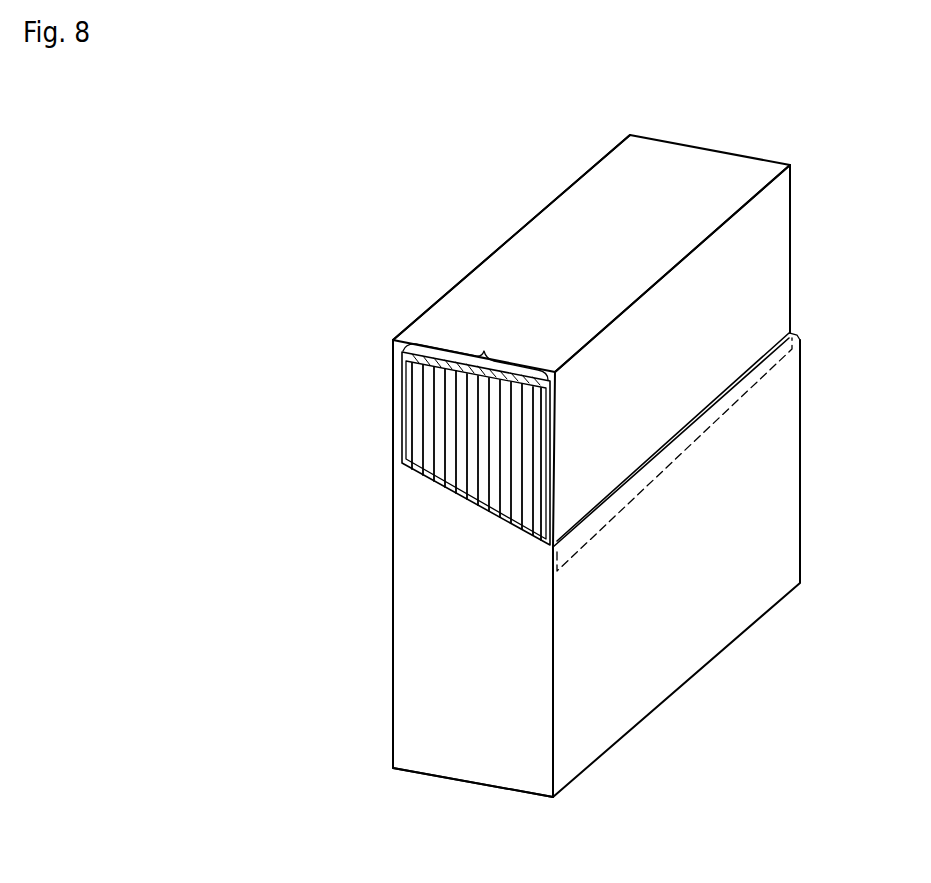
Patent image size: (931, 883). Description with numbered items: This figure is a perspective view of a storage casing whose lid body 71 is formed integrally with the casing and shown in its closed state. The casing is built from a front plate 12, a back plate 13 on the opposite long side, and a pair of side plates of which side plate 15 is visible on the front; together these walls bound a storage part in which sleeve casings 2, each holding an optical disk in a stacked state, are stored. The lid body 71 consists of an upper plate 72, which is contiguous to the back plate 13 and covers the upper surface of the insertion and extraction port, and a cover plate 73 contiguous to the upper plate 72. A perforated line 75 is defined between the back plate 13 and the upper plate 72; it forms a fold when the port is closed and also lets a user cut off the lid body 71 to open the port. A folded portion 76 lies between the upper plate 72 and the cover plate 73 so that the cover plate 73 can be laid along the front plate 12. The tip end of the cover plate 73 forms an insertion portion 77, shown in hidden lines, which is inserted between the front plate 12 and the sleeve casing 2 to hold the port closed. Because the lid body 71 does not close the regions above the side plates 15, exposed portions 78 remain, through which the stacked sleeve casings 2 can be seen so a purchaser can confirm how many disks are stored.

The sleeve casing 2 is at (475, 345).
The front plate 12 is at (598, 743).
The back plate 13 is at (392, 378).
The side plate 15 is at (470, 762).
The lid body 71 is at (532, 255).
The upper plate 72 is at (440, 306).
The cover plate 73 is at (617, 450).
The perforated line 75 is at (566, 190).
The folded portion 76 is at (650, 285).
The insertion portion 77 is at (578, 551).
The exposed portions 78 is at (412, 415).